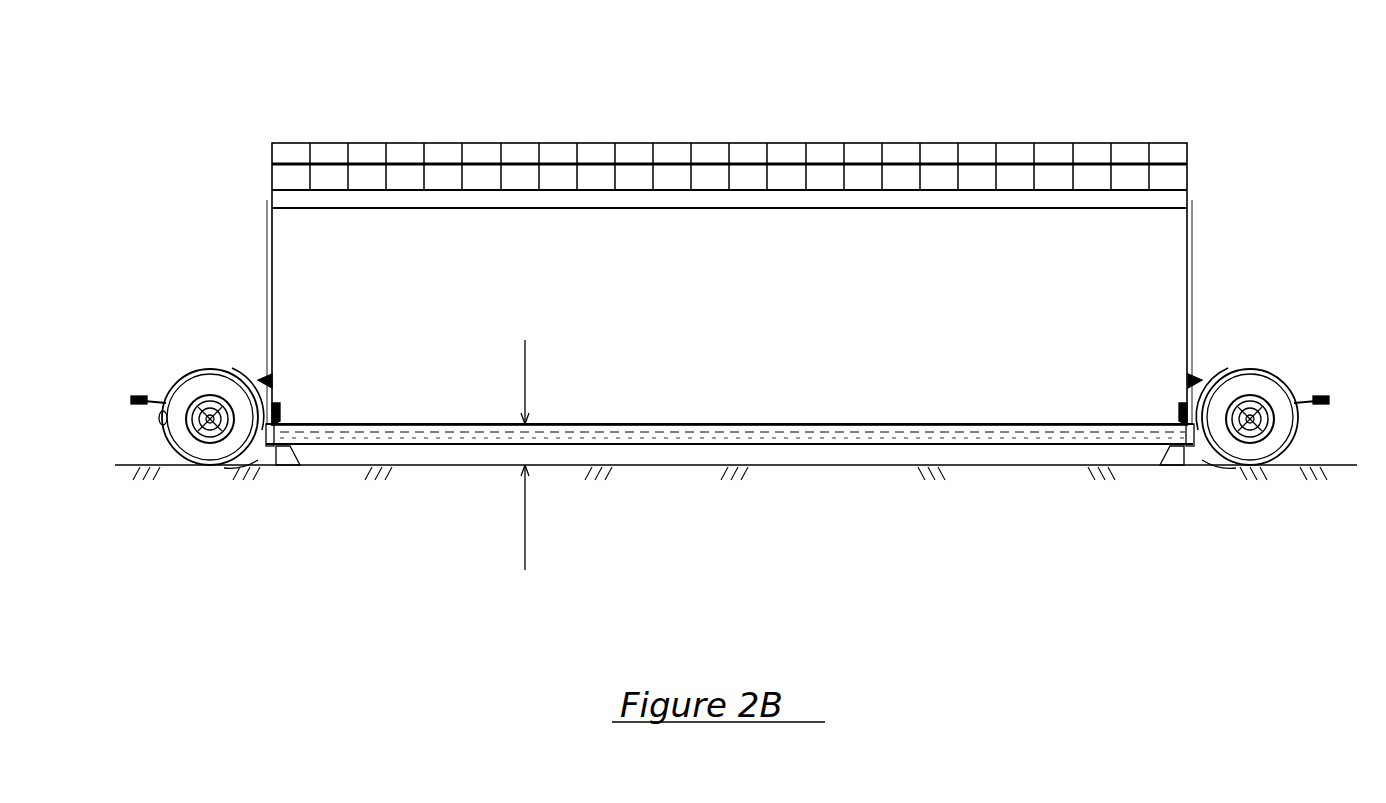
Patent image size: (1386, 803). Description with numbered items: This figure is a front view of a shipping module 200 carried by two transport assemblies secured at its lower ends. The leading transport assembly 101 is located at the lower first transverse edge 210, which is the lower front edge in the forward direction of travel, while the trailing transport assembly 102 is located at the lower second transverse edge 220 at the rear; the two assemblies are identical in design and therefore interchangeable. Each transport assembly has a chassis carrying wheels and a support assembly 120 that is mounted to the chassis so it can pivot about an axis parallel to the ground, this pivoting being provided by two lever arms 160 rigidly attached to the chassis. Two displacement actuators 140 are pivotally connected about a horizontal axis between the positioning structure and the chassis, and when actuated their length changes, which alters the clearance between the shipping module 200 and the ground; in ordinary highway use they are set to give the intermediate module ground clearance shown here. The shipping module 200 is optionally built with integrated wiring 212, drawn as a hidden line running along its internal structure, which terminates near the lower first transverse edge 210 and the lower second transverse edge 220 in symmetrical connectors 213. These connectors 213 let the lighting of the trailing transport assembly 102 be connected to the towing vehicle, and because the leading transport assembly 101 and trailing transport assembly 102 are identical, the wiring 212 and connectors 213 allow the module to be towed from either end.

The shipping module 200 is at (731, 128).
The wiring 212 is at (832, 433).
The connectors 213 is at (282, 425).
The support assembly 120 is at (280, 448).
The lower second transverse edge 220 is at (292, 463).
The lower first transverse edge 210 is at (1198, 456).
The lever arms 160 is at (275, 457).
The trailing transport assembly 102 is at (185, 358).
The leading transport assembly 101 is at (1268, 352).
The displacement actuators 140 is at (250, 393).